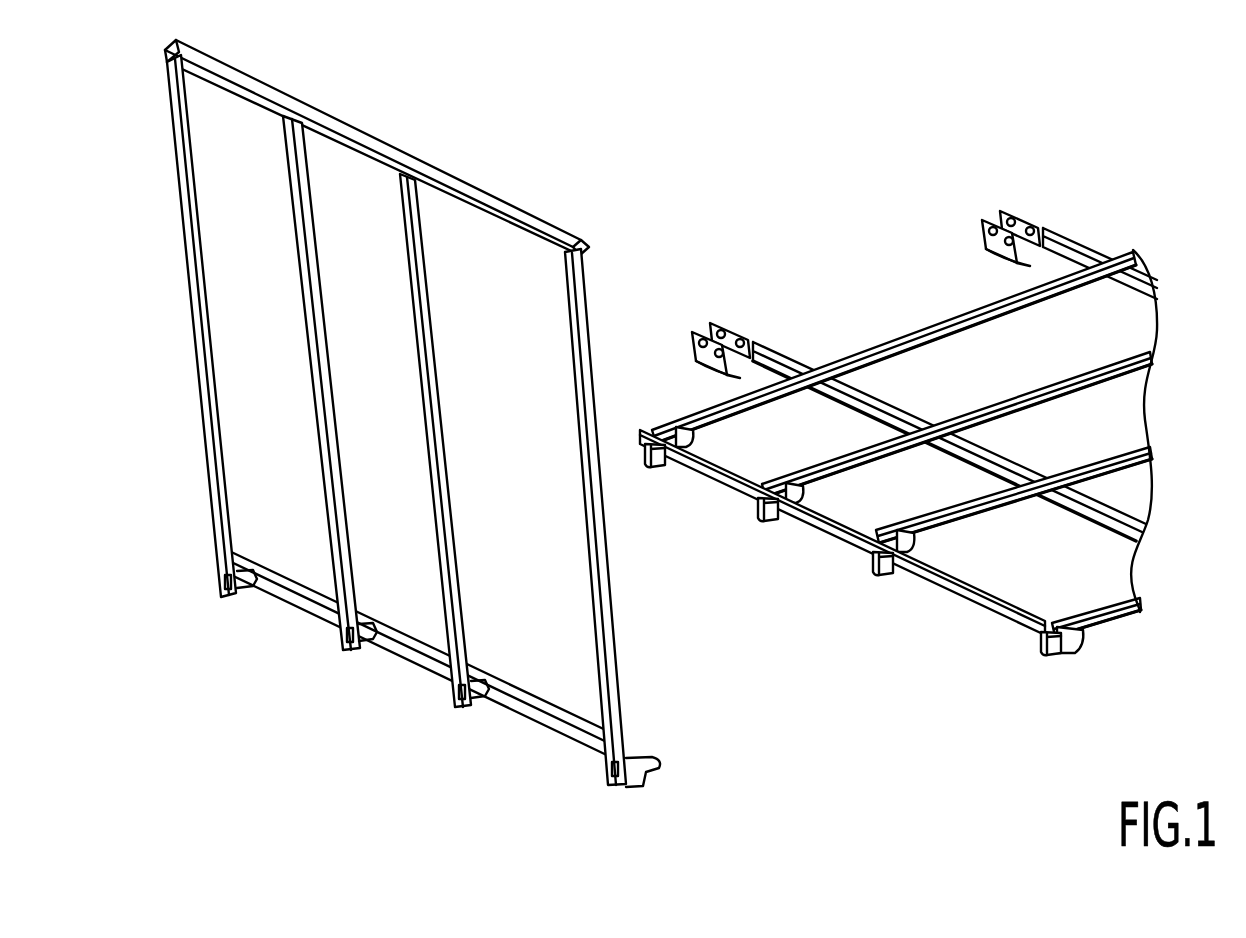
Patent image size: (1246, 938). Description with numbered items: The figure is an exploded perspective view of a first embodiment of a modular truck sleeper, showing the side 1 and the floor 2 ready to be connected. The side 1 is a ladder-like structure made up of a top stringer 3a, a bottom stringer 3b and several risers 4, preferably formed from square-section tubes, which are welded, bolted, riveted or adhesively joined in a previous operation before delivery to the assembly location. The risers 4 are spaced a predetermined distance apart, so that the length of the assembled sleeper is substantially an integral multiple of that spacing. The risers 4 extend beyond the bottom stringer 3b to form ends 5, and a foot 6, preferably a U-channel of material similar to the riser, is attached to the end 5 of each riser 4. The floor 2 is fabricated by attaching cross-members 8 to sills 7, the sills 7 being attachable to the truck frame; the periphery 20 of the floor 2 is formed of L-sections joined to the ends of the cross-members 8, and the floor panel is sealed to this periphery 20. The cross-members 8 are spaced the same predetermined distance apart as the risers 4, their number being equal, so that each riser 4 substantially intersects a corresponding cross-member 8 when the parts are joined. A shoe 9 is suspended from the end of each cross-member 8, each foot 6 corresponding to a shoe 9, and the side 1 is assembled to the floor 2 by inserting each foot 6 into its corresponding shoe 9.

The side 1 is at (217, 155).
The floor 2 is at (1083, 322).
The top stringer 3a is at (508, 204).
The bottom stringer 3b is at (553, 717).
The risers 4 is at (197, 337).
The ends 5 is at (214, 589).
The foot 6 is at (244, 590).
The sills 7 is at (706, 327).
The cross-members 8 is at (912, 335).
The shoe 9 is at (661, 473).
The periphery 20 is at (975, 600).